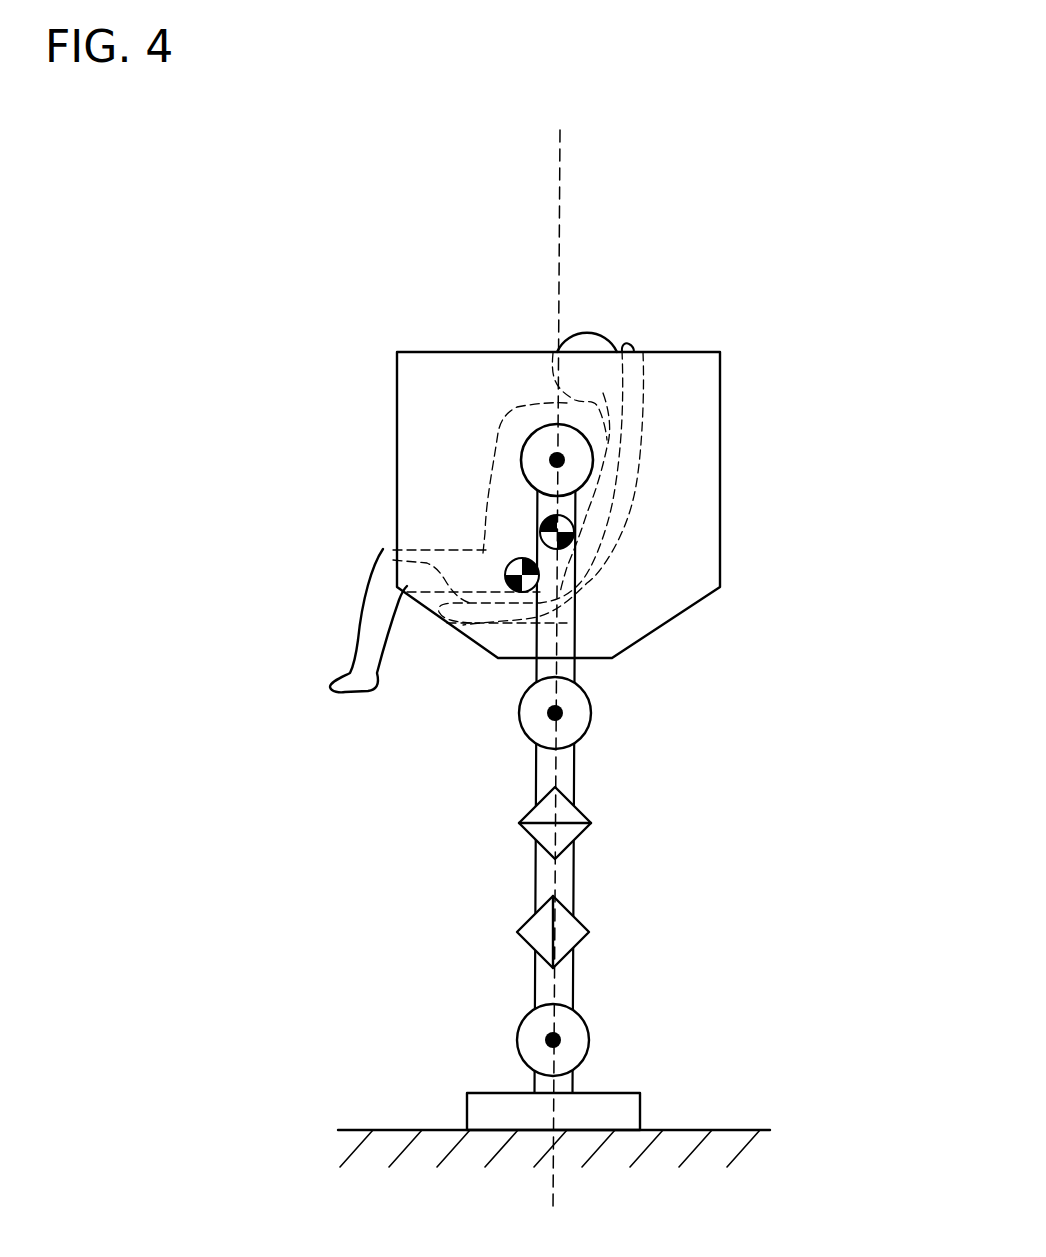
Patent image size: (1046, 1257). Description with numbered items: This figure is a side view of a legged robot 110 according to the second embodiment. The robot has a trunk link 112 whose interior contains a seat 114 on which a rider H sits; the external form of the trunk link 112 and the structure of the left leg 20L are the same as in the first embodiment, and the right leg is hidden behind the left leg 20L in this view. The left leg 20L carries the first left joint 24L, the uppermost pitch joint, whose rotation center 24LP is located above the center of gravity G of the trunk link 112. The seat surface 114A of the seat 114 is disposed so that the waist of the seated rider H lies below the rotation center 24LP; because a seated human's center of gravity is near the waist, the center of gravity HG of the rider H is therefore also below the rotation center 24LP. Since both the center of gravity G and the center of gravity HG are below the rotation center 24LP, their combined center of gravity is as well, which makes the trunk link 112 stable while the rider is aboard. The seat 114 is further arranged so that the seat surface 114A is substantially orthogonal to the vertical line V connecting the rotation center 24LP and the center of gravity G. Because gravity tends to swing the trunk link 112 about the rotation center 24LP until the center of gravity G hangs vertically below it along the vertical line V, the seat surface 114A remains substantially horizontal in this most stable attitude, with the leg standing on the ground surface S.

The legged robot 110 is at (705, 190).
The trunk link 112 is at (601, 352).
The seat 114 is at (637, 430).
The seat surface 114A is at (380, 557).
The rider H is at (352, 693).
The center of gravity of the seated rider HG is at (513, 560).
The center of gravity of the trunk link G is at (573, 520).
The first left joint 24L is at (526, 445).
The rotation center of the first left joint 24LP is at (557, 460).
The left leg 20L is at (514, 792).
The ground surface S is at (728, 1130).
The vertical line V is at (557, 170).